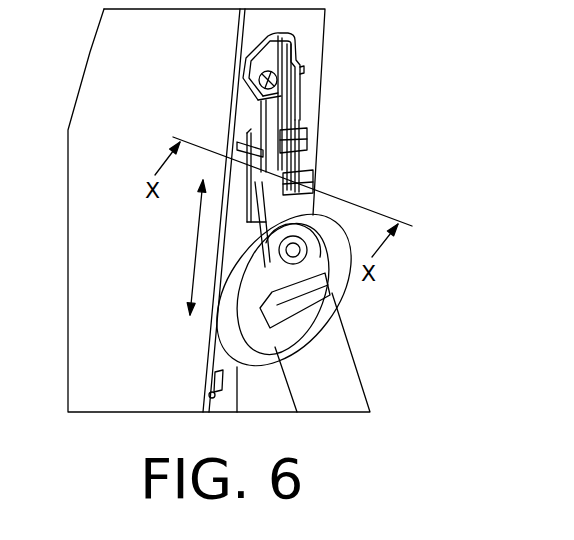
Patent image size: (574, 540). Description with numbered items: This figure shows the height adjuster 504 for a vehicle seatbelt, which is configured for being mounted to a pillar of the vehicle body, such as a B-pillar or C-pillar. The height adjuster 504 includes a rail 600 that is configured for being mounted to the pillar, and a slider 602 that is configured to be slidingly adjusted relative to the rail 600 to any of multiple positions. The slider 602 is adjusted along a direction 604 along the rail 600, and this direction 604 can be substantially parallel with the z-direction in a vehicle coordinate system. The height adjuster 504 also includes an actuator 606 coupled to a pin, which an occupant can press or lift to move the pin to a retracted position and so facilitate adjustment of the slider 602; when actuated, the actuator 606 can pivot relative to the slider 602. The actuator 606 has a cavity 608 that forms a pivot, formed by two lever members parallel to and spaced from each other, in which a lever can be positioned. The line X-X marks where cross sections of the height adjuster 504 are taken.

The height adjuster 504 is at (402, 115).
The rail 600 is at (298, 97).
The slider 602 is at (296, 144).
The direction 604 is at (197, 253).
The actuator 606 is at (312, 212).
The cavity 608 is at (302, 159).